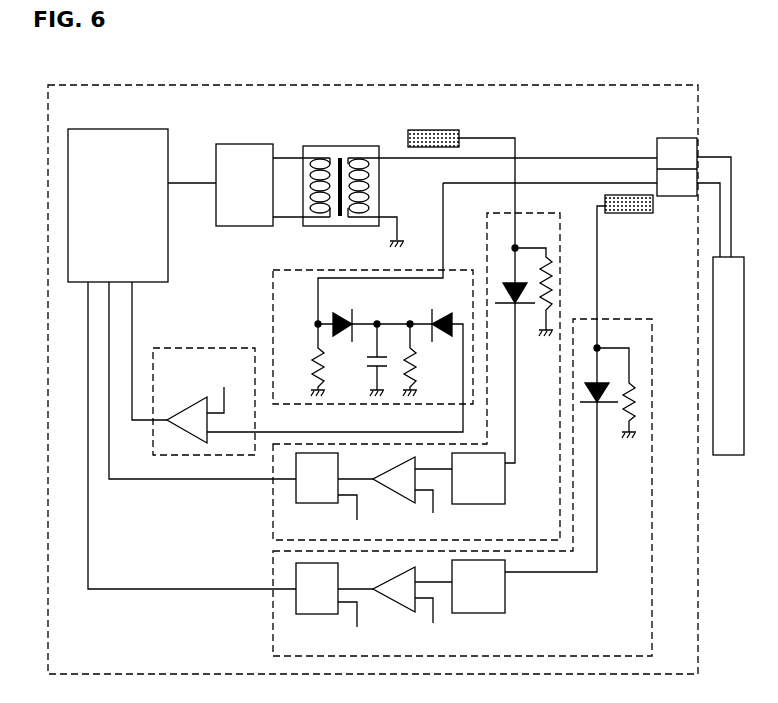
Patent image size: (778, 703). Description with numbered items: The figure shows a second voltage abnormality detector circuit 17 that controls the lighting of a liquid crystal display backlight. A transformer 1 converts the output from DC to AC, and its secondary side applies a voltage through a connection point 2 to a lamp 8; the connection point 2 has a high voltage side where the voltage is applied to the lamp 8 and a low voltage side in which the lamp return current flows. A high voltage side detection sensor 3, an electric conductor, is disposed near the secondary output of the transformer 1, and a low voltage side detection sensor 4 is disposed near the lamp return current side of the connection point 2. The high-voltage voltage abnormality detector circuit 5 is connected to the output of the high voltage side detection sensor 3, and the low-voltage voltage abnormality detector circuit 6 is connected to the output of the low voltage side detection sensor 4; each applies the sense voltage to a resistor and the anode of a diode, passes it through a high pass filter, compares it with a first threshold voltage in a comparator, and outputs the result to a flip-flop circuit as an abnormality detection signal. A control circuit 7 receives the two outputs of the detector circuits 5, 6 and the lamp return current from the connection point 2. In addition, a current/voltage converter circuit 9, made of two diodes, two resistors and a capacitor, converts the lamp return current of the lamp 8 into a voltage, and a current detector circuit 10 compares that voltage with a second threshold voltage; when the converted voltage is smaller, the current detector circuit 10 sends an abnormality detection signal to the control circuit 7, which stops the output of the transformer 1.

The transformer 1 is at (320, 150).
The connection point 2 is at (677, 140).
The high voltage side detection sensor 3 is at (428, 134).
The low voltage side detection sensor 4 is at (633, 195).
The high-voltage voltage abnormality detector circuit 5 is at (273, 509).
The low-voltage voltage abnormality detector circuit 6 is at (273, 600).
The control circuit 7 is at (124, 142).
The lamp 8 is at (727, 455).
The current/voltage converter circuit 9 is at (273, 292).
The current detector circuit 10 is at (165, 348).
The voltage abnormality detector circuit 17 is at (698, 590).